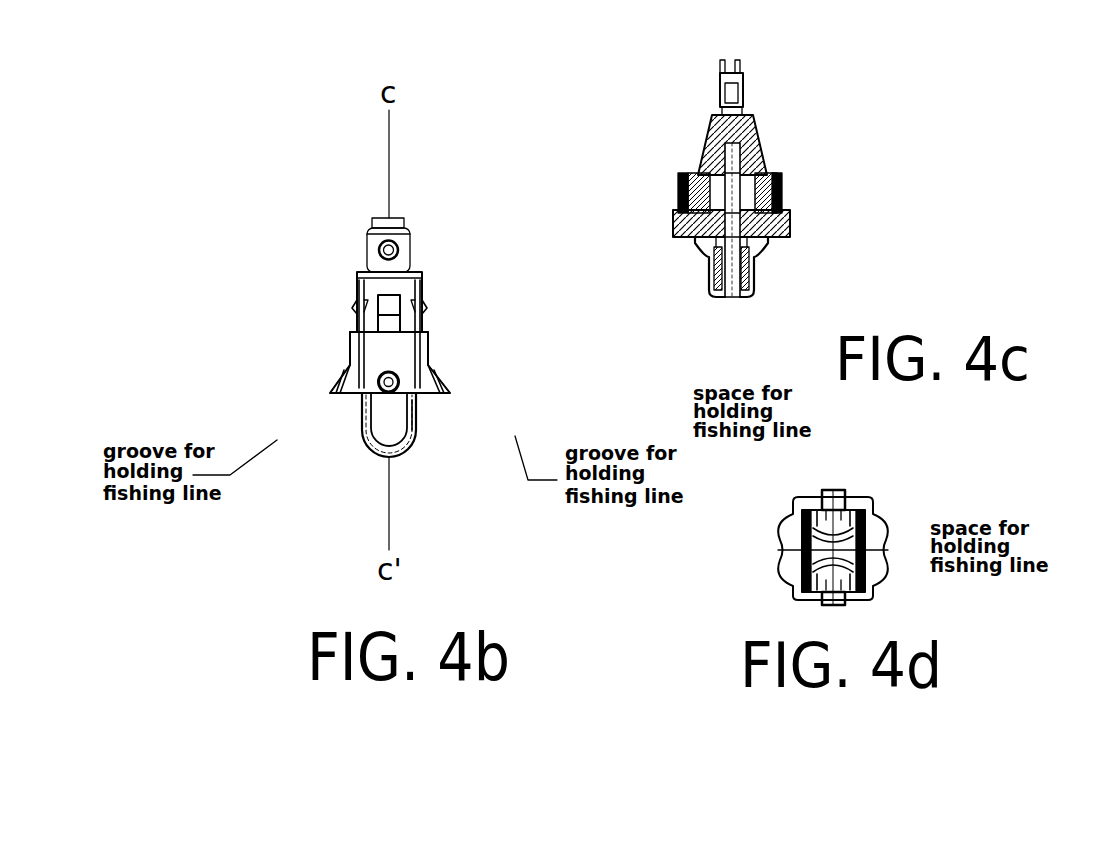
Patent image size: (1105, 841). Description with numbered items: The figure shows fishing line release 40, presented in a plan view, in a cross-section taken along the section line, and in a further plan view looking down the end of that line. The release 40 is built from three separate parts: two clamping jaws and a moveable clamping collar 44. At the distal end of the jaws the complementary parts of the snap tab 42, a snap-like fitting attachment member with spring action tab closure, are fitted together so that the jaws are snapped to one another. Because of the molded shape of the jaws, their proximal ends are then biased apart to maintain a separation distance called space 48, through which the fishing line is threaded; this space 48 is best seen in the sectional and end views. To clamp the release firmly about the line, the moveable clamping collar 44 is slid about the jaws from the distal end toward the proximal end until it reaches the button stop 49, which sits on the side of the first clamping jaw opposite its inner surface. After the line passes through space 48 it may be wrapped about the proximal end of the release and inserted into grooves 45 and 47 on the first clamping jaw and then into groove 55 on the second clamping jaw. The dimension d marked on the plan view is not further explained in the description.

In FIG. 4b, the fishing line release 40 is at (198, 167).
In FIG. 4b, the snap tab 42 is at (413, 242).
In FIG. 4c, the snap tab 42 is at (745, 95).
In FIG. 4b, the moveable clamping collar 44 is at (340, 372).
In FIG. 4c, the moveable clamping collar 44 is at (788, 198).
In FIG. 4b, the groove 45 is at (360, 425).
In FIG. 4c, the groove 45 is at (705, 267).
In FIG. 4b, the groove 47 is at (423, 428).
In FIG. 4c, the space 48 is at (732, 297).
In FIG. 4d, the space 48 is at (860, 542).
In FIG. 4b, the button stop 49 is at (425, 370).
In FIG. 4c, the groove 55 is at (763, 267).
In FIG. 4b, the diameter d is at (333, 329).